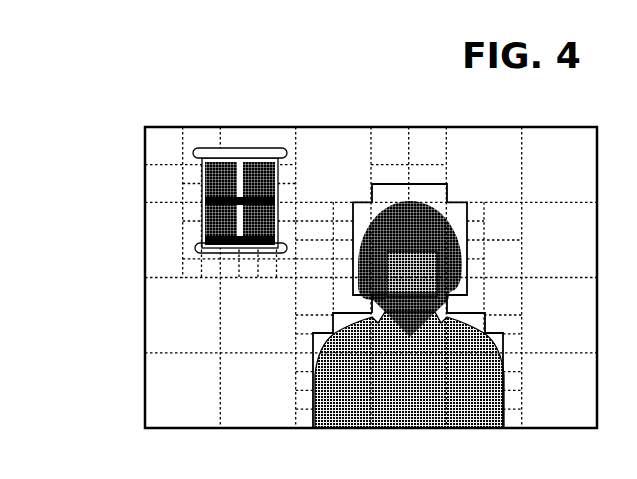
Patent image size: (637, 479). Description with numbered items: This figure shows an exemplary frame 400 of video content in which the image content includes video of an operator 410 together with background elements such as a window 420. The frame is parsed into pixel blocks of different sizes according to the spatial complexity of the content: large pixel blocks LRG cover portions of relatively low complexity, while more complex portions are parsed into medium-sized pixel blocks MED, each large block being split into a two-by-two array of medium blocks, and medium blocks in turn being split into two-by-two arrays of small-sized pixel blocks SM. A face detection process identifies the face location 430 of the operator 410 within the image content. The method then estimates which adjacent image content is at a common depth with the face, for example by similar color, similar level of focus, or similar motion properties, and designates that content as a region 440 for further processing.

The image frame with adaptive grid 400 is at (542, 101).
The operator 410 is at (430, 406).
The window 420 is at (240, 235).
The face location 430 is at (382, 248).
The region for further processing 440 is at (367, 370).
The medium-sized pixel blocks MED is at (118, 162).
The large pixel blocks LRG is at (136, 335).
The small-sized pixel blocks SM is at (193, 258).